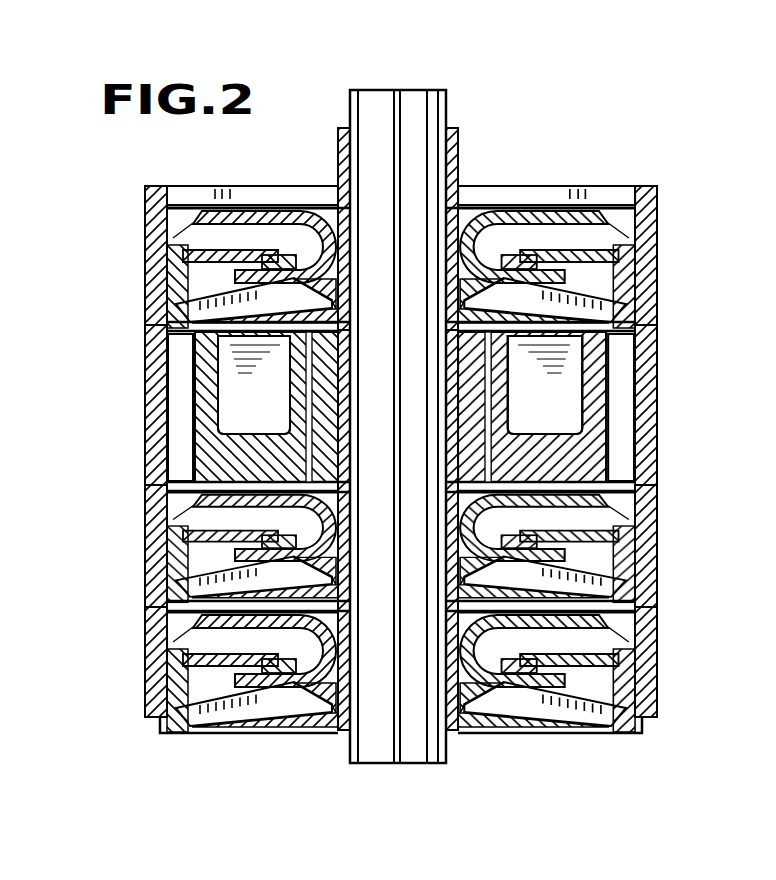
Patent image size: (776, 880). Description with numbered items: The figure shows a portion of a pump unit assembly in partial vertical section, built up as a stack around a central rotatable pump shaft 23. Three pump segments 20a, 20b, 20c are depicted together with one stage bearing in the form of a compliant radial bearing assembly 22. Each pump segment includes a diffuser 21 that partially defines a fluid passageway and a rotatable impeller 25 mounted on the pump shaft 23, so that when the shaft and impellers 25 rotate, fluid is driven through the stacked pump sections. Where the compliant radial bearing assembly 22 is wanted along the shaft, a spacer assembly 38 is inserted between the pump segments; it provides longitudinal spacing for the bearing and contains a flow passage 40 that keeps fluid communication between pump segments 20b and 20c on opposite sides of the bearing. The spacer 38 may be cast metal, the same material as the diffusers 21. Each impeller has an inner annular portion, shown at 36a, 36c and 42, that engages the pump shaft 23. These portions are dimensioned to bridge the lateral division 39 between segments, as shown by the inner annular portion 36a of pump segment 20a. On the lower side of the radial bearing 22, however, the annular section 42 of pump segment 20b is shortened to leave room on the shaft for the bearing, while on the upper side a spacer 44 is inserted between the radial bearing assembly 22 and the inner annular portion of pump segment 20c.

The pump shaft 23 is at (448, 92).
The inner annular portion 36c is at (460, 134).
The inner annular portion 36a is at (462, 727).
The impeller 25 is at (640, 218).
The pump segment 20c is at (662, 250).
The diffuser 21 is at (632, 285).
The spacer 44 is at (185, 286).
The flow passage 40 is at (622, 356).
The spacer assembly 38 is at (640, 385).
The compliant radial bearing assembly 22 is at (662, 438).
The annular section 42 is at (600, 456).
The lateral division 39 is at (640, 613).
The pump segment 20b is at (138, 576).
The pump segment 20a is at (663, 635).